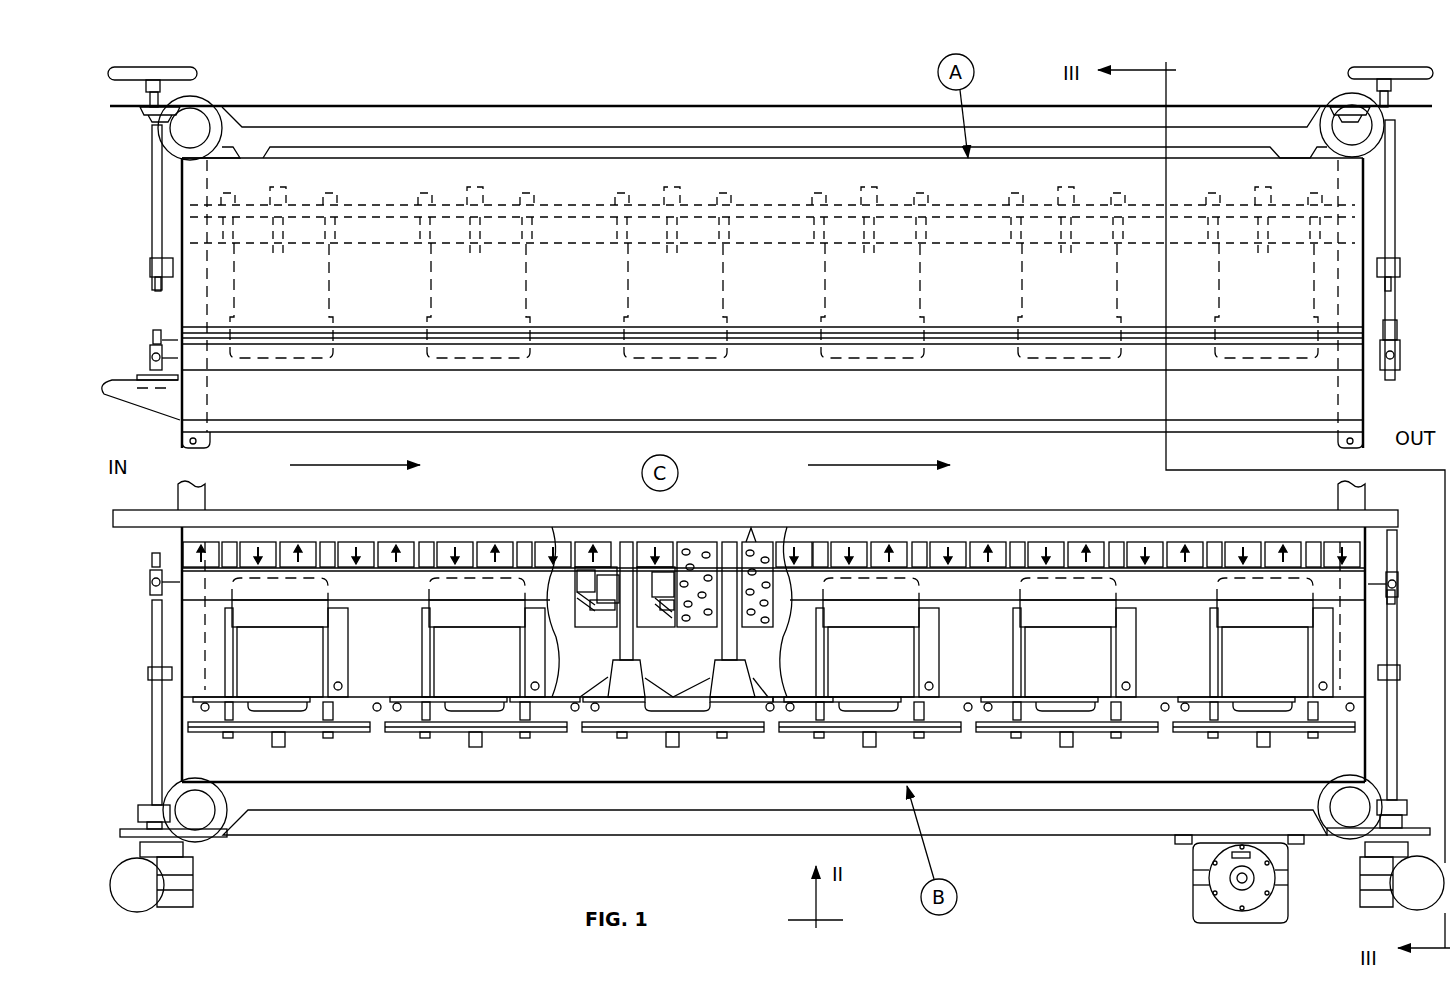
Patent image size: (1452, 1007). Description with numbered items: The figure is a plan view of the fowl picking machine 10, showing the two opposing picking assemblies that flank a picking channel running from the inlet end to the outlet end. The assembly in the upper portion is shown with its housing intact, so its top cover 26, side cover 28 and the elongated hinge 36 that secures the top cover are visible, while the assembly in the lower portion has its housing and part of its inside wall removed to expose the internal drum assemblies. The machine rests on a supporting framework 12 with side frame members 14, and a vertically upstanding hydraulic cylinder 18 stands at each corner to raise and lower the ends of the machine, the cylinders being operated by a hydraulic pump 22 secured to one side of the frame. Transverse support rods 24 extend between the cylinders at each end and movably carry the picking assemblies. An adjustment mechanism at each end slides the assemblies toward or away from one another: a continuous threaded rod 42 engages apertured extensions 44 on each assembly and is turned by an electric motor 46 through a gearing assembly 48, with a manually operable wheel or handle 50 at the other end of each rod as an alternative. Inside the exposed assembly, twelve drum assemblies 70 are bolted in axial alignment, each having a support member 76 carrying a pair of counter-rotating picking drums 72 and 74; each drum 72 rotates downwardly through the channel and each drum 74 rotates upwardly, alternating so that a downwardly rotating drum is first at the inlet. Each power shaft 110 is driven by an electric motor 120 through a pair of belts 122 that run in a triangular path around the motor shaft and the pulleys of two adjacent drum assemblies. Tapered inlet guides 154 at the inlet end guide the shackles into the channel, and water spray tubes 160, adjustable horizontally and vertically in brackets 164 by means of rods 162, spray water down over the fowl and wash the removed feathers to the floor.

The fowl picking machine 10 is at (722, 96).
The supporting framework 12 is at (1000, 838).
The side frame members 14 is at (828, 118).
The hydraulic cylinder 18 is at (200, 125).
The hydraulic pump 22 is at (1192, 892).
The transverse support rods 24 is at (200, 497).
The top cover 26 is at (792, 292).
The side cover 28 is at (497, 158).
The elongated hinge 36 is at (572, 335).
The threaded rod 42 is at (152, 190).
The apertured extensions 44 is at (150, 268).
The electric motor 46 is at (150, 895).
The gearing assembly 48 is at (185, 888).
The wheel or handle 50 is at (188, 70).
The drum assembly 70 is at (337, 540).
The picking drum 72 is at (207, 550).
The picking drum 74 is at (270, 547).
The support member 76 is at (636, 688).
The power shaft 110 is at (226, 740).
The electric motor 120 is at (290, 665).
The belts 122 is at (307, 732).
The tapered inlet guides 154 is at (130, 398).
The water spray tube 160 is at (1402, 372).
The rods 162 is at (150, 358).
The brackets 164 is at (152, 338).